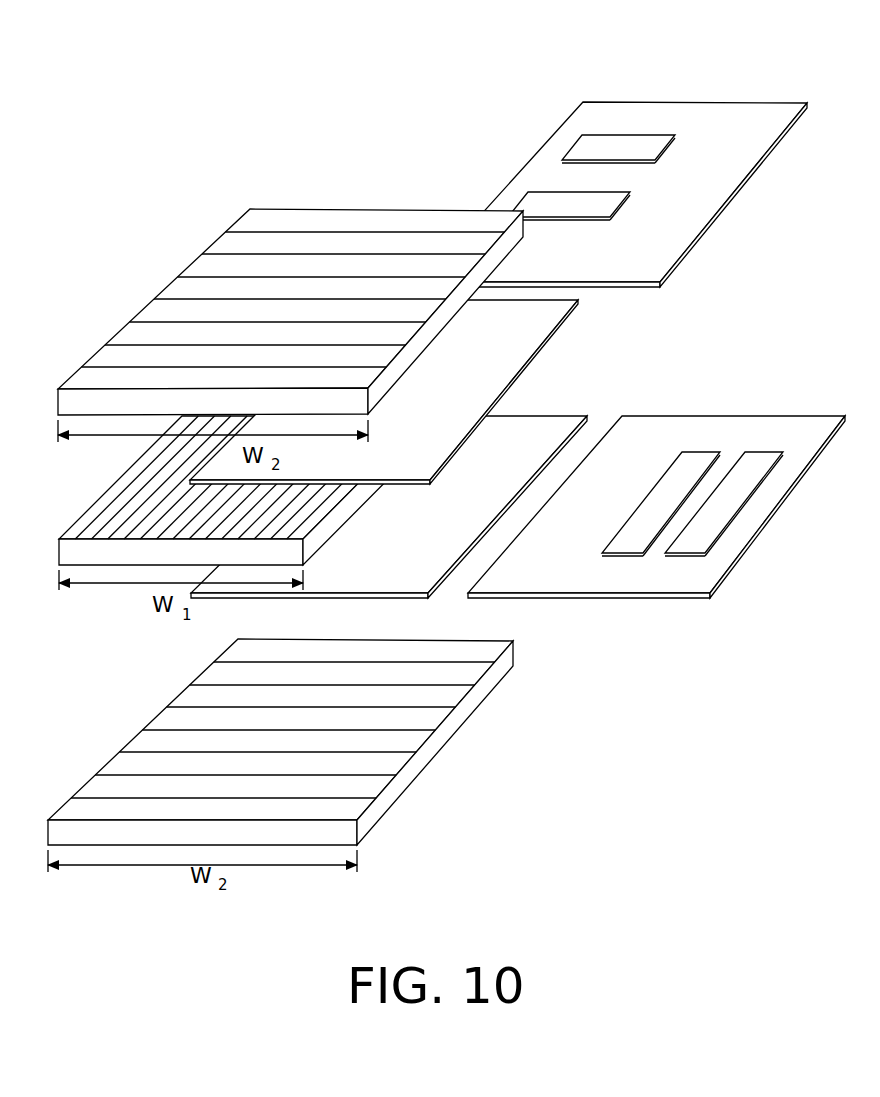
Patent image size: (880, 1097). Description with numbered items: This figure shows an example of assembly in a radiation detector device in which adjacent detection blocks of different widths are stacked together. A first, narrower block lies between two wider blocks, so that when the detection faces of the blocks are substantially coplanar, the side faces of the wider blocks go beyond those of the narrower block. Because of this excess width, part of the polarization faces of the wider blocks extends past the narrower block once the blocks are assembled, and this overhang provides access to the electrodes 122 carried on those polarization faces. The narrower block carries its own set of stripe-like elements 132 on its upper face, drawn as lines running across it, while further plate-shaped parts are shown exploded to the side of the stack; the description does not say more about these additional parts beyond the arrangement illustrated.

The electrodes 122 is at (387, 255).
The conductive lines 132 is at (297, 518).